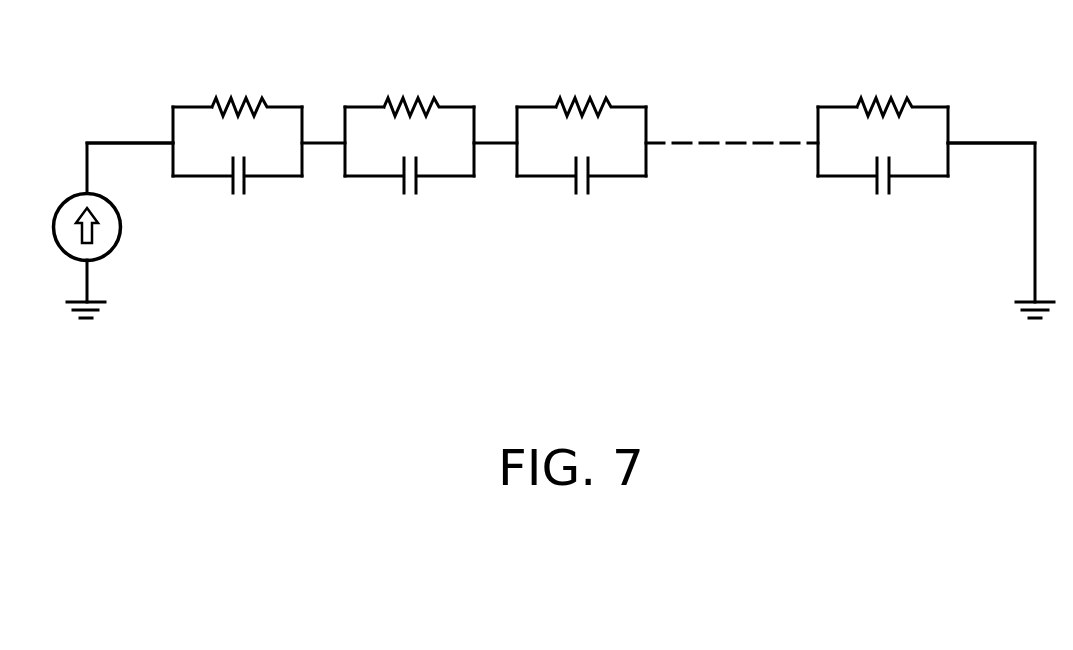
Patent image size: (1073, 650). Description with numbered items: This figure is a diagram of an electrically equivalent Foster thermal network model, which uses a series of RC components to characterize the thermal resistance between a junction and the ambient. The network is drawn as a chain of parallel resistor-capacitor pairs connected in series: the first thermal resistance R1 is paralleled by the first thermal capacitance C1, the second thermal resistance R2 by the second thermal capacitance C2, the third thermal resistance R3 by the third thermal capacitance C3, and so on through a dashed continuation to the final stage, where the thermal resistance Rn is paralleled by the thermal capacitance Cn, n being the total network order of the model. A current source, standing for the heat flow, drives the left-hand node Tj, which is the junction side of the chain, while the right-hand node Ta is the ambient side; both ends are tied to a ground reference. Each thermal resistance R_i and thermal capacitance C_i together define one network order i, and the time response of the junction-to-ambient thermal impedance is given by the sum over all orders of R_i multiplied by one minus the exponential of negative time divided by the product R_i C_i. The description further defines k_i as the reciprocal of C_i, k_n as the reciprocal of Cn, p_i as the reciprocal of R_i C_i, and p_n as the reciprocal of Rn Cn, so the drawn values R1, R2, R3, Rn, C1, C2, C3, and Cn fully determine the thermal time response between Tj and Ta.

The thermal resistance R1 is at (237, 114).
The thermal resistance R2 is at (409, 114).
The thermal resistance R3 is at (581, 114).
The thermal resistance Rn is at (883, 114).
The thermal capacitance C1 is at (237, 202).
The thermal capacitance C2 is at (409, 202).
The thermal capacitance C3 is at (581, 202).
The thermal capacitance Cn is at (883, 202).
The junction temperature node Tj is at (130, 118).
The ambient temperature node Ta is at (991, 118).